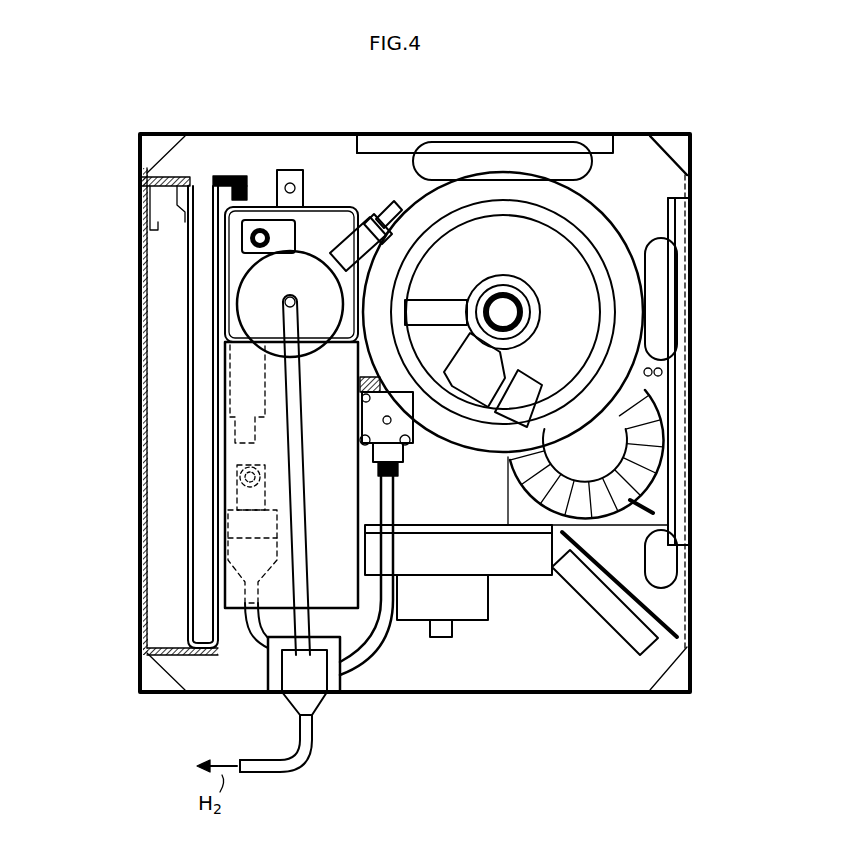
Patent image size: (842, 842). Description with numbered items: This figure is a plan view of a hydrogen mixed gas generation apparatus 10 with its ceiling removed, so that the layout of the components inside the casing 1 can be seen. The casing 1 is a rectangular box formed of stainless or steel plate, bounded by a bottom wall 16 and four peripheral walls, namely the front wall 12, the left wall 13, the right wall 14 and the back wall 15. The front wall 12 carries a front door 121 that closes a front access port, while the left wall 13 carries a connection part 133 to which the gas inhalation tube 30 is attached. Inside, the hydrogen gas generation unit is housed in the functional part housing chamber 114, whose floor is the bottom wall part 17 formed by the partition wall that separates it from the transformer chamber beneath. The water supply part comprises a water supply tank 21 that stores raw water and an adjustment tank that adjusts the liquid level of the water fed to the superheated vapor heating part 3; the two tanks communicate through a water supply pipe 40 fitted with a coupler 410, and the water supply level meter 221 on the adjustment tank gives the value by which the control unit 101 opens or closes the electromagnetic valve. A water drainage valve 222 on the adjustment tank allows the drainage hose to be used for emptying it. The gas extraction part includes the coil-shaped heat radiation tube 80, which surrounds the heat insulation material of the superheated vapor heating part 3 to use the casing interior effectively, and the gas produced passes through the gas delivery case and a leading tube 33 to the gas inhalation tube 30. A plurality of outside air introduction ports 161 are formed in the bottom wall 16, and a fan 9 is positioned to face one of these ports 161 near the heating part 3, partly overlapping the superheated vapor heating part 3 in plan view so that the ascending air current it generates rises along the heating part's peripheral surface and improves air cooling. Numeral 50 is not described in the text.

The casing 1 is at (698, 162).
The superheated vapor heating part 3 is at (513, 238).
The fan 9 is at (652, 440).
The hydrogen mixed gas generation apparatus 10 is at (88, 128).
The front wall 12 is at (147, 660).
The left wall 13 is at (563, 694).
The right wall 14 is at (260, 133).
The back wall 15 is at (692, 243).
The bottom wall 16 is at (630, 158).
The bottom wall part 17 is at (650, 182).
The water supply tank 21 is at (228, 497).
The gas inhalation tube 30 is at (273, 773).
The leading tube 33 is at (245, 470).
The water supply pipe 40 is at (250, 655).
The controller 50 is at (435, 313).
The heat radiation tube 80 is at (376, 210).
The control unit 101 is at (620, 675).
The functional part housing chamber 114 is at (473, 657).
The front door 121 is at (190, 322).
The connection part 133 is at (340, 672).
The outside air introduction ports 161 is at (458, 138).
The water supply level meter 221 is at (246, 245).
The water drainage valve 222 is at (240, 385).
The coupler 410 is at (232, 553).